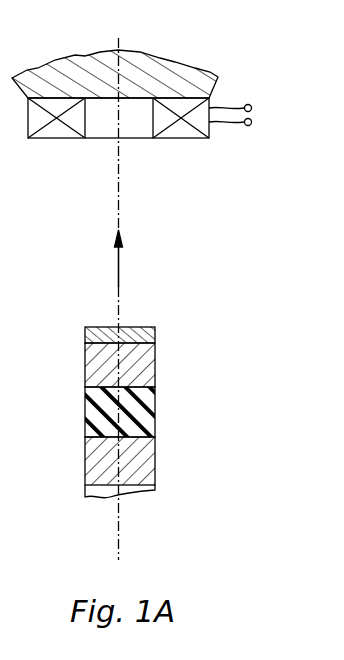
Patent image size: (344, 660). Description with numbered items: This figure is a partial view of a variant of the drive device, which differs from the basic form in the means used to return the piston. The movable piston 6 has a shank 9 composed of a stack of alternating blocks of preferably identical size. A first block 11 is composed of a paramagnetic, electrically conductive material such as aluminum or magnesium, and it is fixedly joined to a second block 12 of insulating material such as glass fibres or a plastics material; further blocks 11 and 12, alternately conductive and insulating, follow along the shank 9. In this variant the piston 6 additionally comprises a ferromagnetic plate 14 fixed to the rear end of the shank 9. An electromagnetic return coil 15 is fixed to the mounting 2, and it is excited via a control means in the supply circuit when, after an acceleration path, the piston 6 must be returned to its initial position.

The mounting 2 is at (173, 75).
The electromagnetic return coil 15 is at (55, 132).
The movable piston 6 is at (120, 393).
The shank 9 is at (119, 396).
The ferromagnetic plate 14 is at (93, 328).
The first block 11 is at (142, 363).
The second block 12 is at (145, 418).